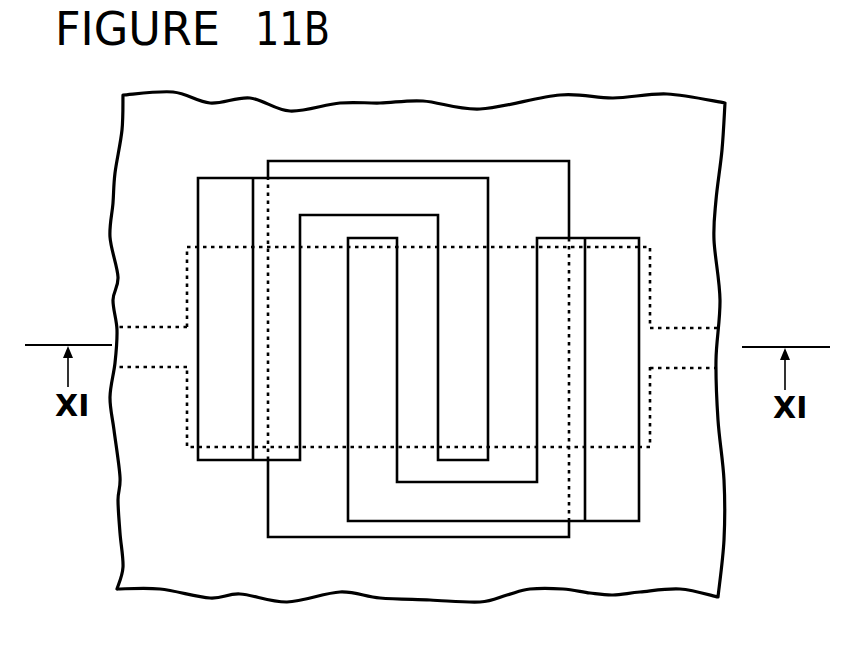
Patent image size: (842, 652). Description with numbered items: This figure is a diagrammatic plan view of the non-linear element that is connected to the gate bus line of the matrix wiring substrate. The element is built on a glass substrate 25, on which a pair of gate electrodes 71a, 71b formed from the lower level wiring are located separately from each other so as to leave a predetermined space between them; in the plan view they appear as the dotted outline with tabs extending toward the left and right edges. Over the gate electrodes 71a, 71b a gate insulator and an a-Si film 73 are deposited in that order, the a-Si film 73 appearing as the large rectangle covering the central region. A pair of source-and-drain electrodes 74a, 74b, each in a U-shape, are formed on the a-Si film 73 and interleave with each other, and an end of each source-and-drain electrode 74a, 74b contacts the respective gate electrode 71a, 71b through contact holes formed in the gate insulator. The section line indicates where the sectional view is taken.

The glass substrate 25 is at (702, 193).
The gate electrode 71a is at (143, 327).
The gate electrode 71b is at (692, 328).
The a-Si film 73 is at (550, 161).
The source-and-drain electrode 74a is at (223, 178).
The source-and-drain electrode 74b is at (612, 521).